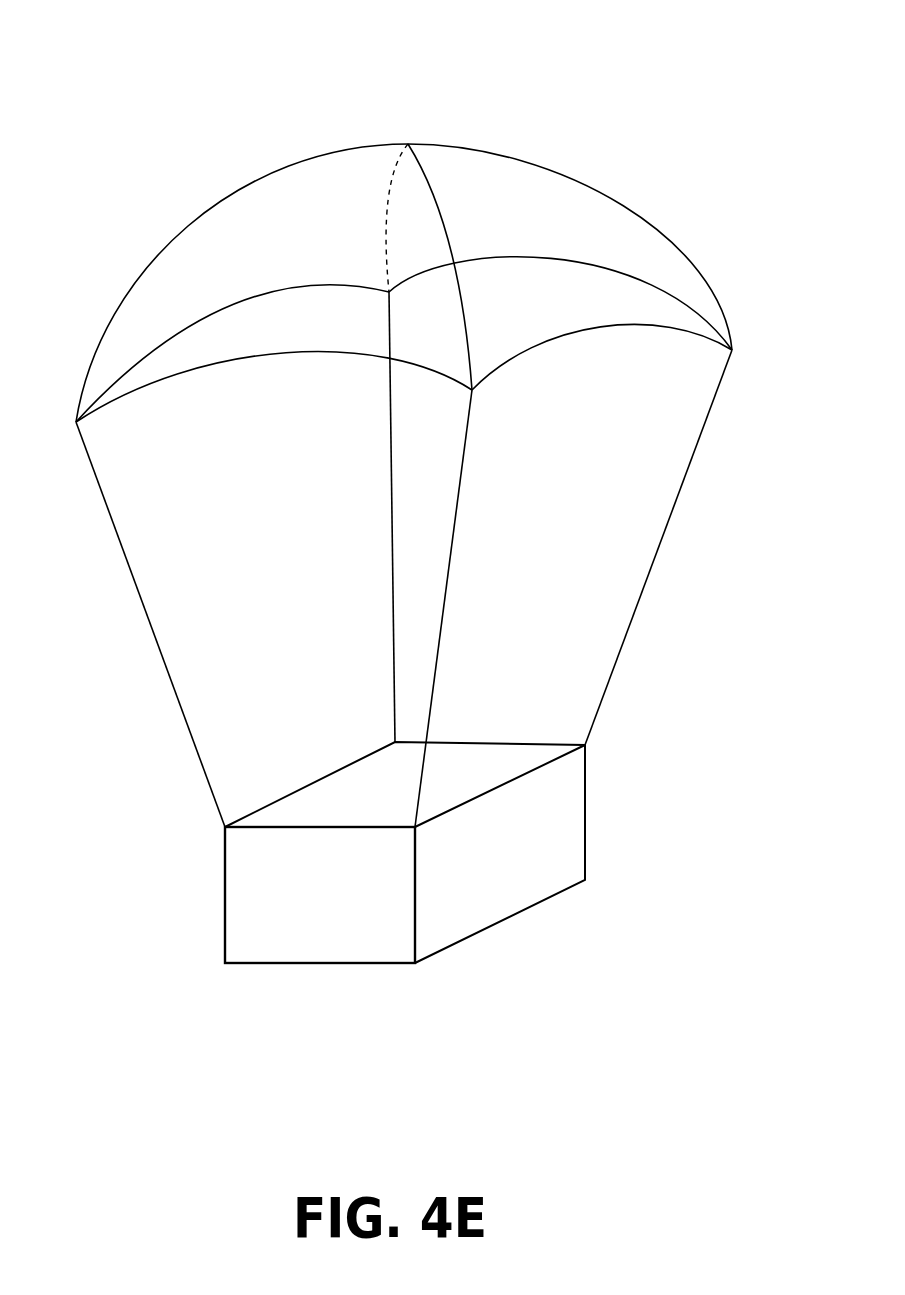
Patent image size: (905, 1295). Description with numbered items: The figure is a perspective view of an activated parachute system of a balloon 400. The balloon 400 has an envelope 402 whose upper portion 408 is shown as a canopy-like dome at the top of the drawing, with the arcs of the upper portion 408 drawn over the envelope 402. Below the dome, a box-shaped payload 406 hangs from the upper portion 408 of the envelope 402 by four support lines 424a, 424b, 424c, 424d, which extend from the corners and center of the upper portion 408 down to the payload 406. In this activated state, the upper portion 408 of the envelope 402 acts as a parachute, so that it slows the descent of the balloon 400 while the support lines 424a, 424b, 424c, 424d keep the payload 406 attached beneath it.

The balloon 400 is at (712, 82).
The envelope 402 is at (222, 192).
The upper portion 408 is at (640, 212).
The payload 406 is at (222, 900).
The support line 424a is at (136, 592).
The support line 424b is at (391, 470).
The support line 424c is at (688, 470).
The support line 424d is at (449, 580).